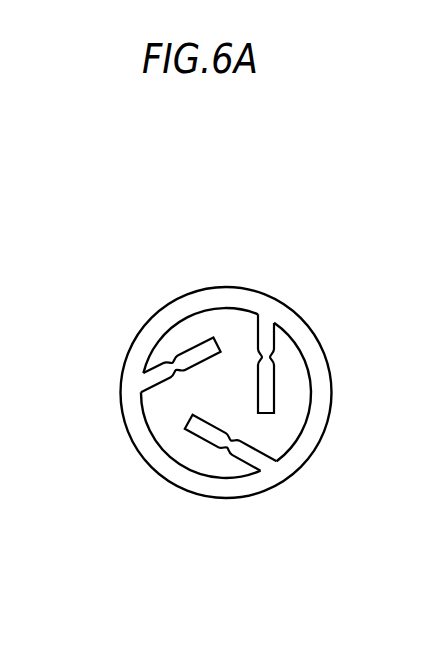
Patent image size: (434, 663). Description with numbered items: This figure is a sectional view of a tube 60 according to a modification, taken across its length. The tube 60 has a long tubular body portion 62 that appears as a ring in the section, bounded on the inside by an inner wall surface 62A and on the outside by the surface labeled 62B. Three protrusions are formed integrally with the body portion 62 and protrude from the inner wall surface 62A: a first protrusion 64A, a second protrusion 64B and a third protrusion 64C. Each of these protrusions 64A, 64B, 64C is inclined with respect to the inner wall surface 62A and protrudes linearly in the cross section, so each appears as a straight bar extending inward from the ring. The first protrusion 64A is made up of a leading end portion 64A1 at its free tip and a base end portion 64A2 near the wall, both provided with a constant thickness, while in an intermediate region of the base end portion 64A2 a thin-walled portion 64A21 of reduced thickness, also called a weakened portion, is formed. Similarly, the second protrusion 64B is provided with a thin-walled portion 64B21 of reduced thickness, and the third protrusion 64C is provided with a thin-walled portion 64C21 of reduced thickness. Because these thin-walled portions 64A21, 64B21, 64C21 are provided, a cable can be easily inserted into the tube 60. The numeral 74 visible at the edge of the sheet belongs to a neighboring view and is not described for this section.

The tube 60 is at (282, 484).
The body portion 62 is at (250, 298).
The inner wall surface 62A is at (298, 351).
The outer peripheral surface 62B is at (218, 287).
The first protrusion 64A is at (130, 372).
The leading end portion 64A1 is at (187, 357).
The base end portion 64A2 is at (147, 360).
The thin-walled portion 64A21 is at (178, 386).
The second protrusion 64B is at (279, 384).
The thin-walled portion 64B21 is at (279, 359).
The third protrusion 64C is at (202, 447).
The thin-walled portion 64C21 is at (230, 459).
The element of adjacent figure 74 is at (424, 296).